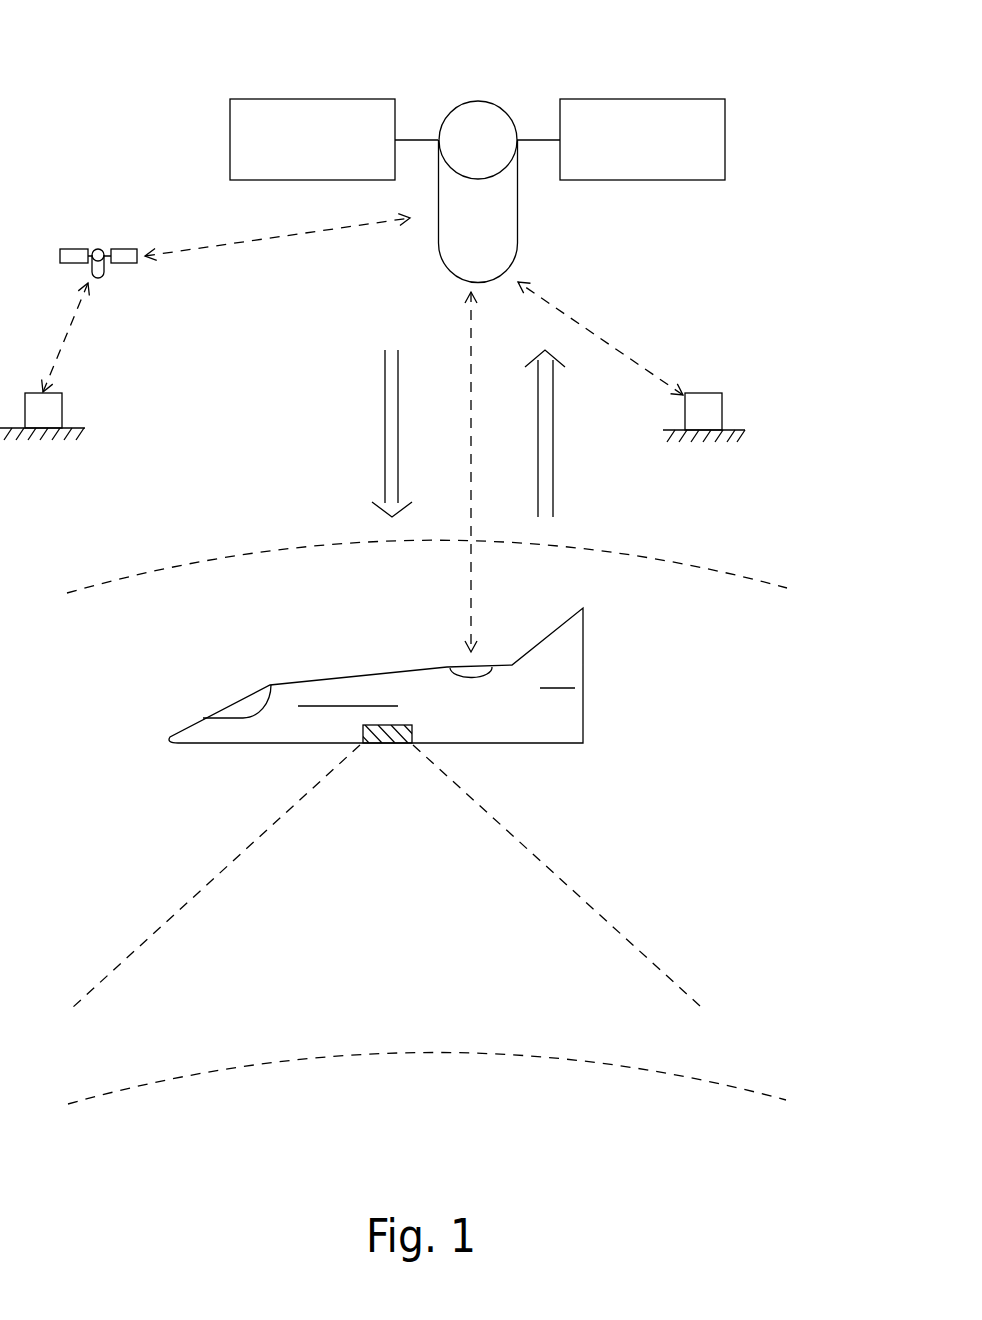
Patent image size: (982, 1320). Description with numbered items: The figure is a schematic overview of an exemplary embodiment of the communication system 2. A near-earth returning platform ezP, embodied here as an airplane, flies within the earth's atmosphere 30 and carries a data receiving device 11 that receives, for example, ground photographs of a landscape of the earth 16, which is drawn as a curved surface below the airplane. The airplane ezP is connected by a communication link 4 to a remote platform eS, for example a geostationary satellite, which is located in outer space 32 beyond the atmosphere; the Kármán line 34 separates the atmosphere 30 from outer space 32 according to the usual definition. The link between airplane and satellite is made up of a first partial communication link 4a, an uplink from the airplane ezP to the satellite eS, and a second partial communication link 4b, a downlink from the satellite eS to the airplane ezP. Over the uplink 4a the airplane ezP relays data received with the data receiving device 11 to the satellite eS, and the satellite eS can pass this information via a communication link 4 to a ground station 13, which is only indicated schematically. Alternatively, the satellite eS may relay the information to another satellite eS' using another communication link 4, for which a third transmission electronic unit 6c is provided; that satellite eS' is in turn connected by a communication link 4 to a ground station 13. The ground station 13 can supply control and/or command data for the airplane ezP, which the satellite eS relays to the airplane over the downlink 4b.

The remote platform eS is at (477, 143).
The another satellite eS' is at (105, 215).
The communication link 4 is at (468, 628).
The third transmission electronic unit 6c is at (267, 238).
The ground station 13 is at (372, 417).
The first partial communication link 4a is at (547, 418).
The second partial communication link 4b is at (392, 455).
The communication system 2 is at (145, 467).
The outer space 32 is at (784, 537).
The Kármán line 34 is at (673, 564).
The earth's atmosphere 30 is at (751, 741).
The data receiving device 11 is at (383, 745).
The near-earth returning platform ezP is at (555, 746).
The earth 16 is at (427, 1083).